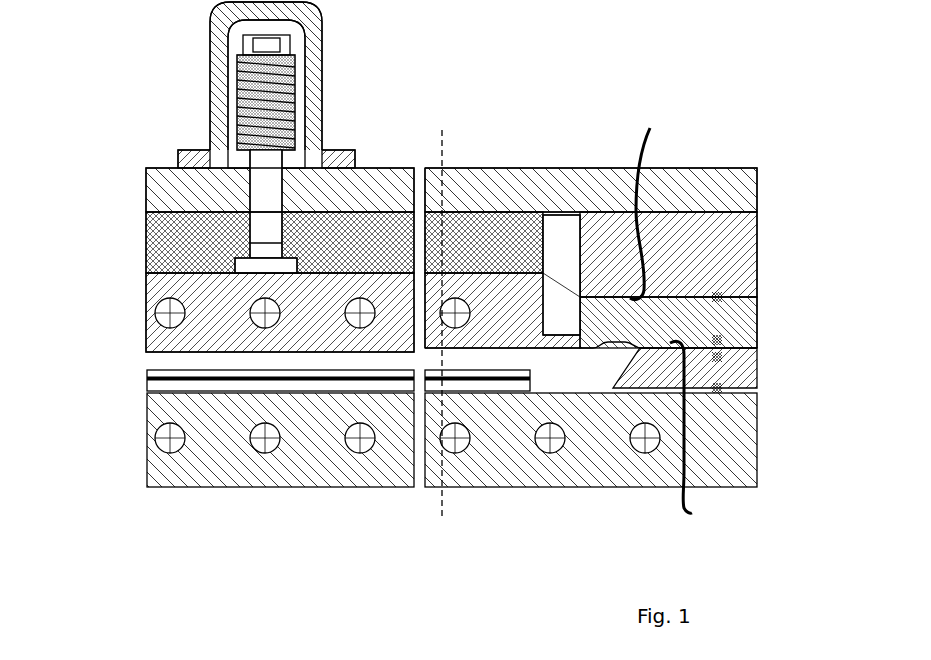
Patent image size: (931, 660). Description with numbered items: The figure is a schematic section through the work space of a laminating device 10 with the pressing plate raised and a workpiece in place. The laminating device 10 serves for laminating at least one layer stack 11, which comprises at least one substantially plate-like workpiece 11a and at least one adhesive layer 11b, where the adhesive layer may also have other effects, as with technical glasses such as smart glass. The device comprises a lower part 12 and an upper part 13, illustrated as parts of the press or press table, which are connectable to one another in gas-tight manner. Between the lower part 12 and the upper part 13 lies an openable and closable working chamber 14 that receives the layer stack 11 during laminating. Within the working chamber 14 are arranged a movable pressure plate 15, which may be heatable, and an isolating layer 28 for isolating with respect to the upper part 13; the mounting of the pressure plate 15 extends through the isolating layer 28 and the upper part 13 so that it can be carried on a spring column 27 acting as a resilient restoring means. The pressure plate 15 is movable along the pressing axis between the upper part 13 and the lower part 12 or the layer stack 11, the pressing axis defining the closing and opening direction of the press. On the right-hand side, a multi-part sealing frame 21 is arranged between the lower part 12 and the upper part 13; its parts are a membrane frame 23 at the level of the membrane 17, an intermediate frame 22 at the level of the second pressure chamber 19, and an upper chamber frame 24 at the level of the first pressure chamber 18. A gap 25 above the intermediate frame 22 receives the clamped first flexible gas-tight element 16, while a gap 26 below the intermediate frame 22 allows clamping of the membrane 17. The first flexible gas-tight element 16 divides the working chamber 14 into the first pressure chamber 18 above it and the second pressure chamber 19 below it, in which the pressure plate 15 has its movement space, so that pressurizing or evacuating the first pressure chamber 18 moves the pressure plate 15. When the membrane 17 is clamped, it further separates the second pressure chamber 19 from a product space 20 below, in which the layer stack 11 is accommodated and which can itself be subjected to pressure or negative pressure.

The laminating device 10 is at (249, 520).
The layer stack 11 is at (325, 392).
The workpiece 11a is at (352, 384).
The adhesive layer 11b is at (388, 372).
The lower part 12 is at (755, 432).
The upper part 13 is at (690, 166).
The working chamber 14 is at (80, 392).
The movable pressure plate 15 is at (146, 340).
The first flexible gas-tight element 16 is at (552, 215).
The membrane 17 is at (757, 347).
The first pressure chamber 18 is at (558, 251).
The second pressure chamber 19 is at (558, 311).
The product space 20 is at (147, 362).
The sealing frame 21 is at (757, 277).
The intermediate frame 22 is at (758, 310).
The membrane frame 23 is at (757, 373).
The upper chamber frame 24 is at (757, 233).
The gap 25 is at (644, 200).
The gap 26 is at (693, 437).
The spring column 27 is at (292, 104).
The isolating layer 28 is at (480, 235).